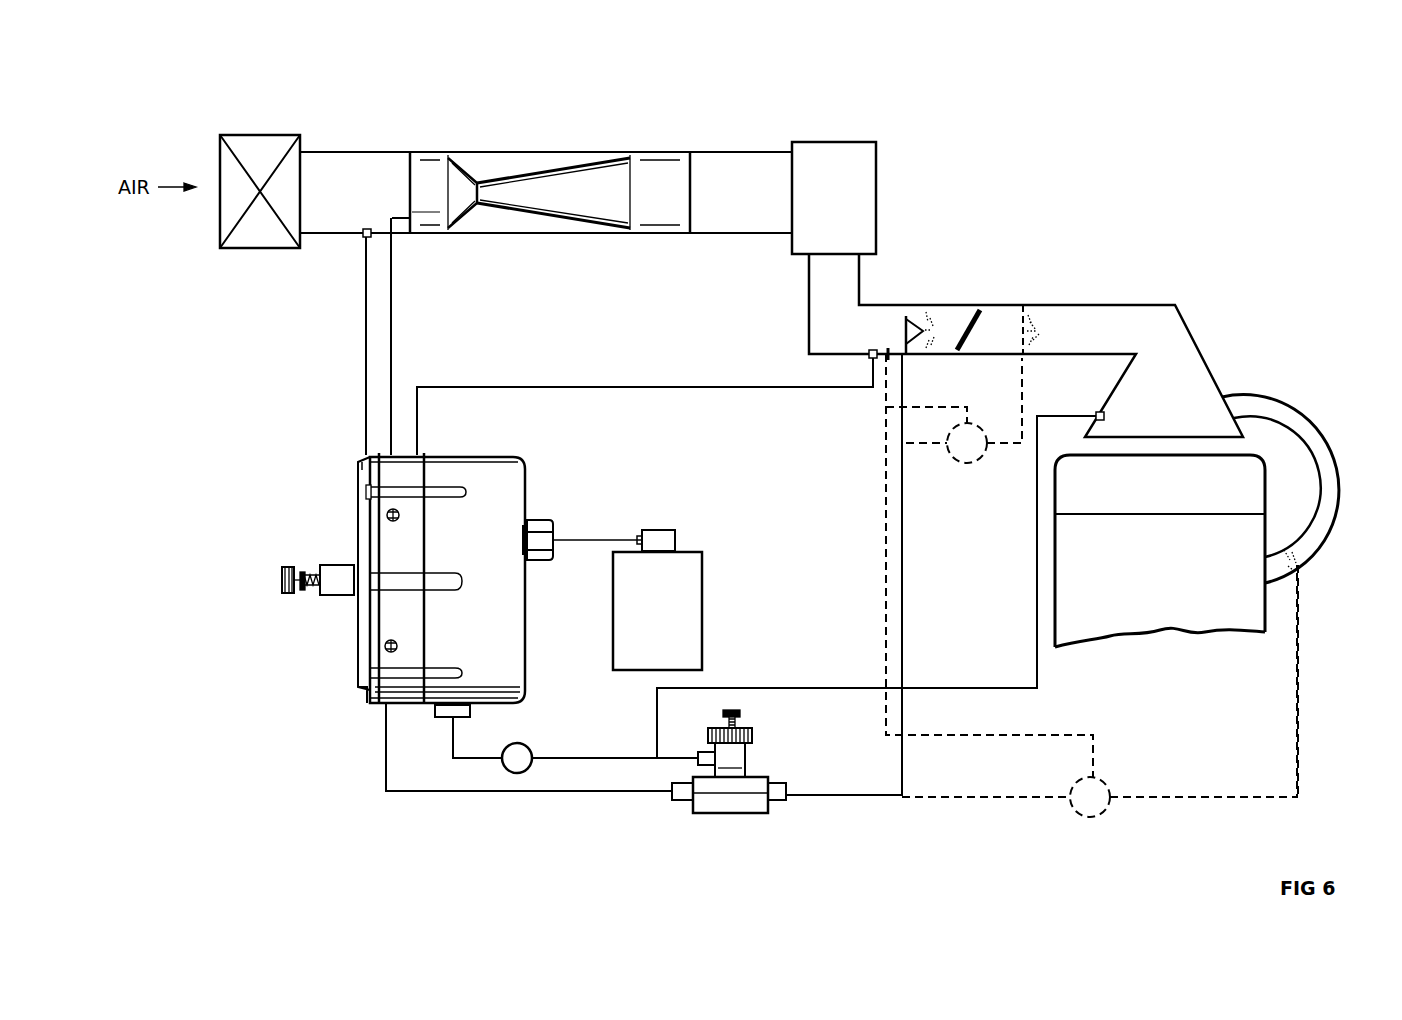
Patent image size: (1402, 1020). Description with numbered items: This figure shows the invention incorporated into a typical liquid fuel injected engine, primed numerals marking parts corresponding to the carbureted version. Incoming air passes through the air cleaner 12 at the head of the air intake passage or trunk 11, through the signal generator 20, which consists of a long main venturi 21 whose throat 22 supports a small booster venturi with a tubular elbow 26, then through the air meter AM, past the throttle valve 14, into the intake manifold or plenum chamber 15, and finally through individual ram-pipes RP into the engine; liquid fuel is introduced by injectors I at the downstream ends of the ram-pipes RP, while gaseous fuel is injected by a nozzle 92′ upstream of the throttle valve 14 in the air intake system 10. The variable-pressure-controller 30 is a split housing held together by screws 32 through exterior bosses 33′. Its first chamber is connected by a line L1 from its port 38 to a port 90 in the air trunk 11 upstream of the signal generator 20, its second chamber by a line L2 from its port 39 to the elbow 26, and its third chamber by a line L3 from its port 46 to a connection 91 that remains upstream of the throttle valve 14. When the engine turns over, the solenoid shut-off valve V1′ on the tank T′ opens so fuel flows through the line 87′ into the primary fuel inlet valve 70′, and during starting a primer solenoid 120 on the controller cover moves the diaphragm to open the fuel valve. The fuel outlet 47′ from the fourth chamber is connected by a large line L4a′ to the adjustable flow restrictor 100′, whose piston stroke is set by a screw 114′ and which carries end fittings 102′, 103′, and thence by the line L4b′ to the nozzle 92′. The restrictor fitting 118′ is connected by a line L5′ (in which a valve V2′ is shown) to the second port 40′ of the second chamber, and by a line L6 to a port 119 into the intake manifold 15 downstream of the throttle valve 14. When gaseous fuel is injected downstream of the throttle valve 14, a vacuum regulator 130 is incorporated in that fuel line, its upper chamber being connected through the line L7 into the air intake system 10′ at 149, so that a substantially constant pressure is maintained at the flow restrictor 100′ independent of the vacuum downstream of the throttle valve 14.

The air cleaner 12 is at (280, 136).
The air intake passage 10′ is at (347, 185).
The air intake trunk 11 is at (524, 158).
The throat of main venturi 22 is at (478, 182).
The main venturi 21 is at (600, 210).
The signal generator 20 is at (567, 198).
The tubular elbow 26 is at (418, 213).
The air meter AM is at (878, 162).
The air intake system 10 is at (846, 309).
The port in air trunk 90 is at (365, 240).
The line L1 is at (362, 347).
The line L2 is at (396, 310).
The line L3 is at (610, 386).
The port 91 is at (870, 358).
The connection point 149 is at (890, 349).
The fuel nozzle 92′ is at (915, 315).
The throttle valve 14 is at (972, 318).
The vacuum regulator 130 is at (973, 423).
The line L7 is at (884, 508).
The fuel line L4b′ is at (870, 800).
The intake manifold port 119 is at (1097, 412).
The line L6 is at (836, 687).
The intake manifold 15 is at (1205, 378).
The ram-pipes RP is at (1284, 420).
The injectors I is at (1283, 541).
The variable-pressure-controller 30 is at (495, 560).
The port 38 is at (358, 462).
The port 39 is at (378, 452).
The port 46 is at (425, 453).
The screws 32 is at (368, 490).
The primer solenoid 120 is at (332, 598).
The exterior bosses 33′ is at (450, 666).
The port 40′ is at (385, 706).
The fuel outlet 47′ is at (462, 716).
The primary fuel inlet valve 70′ is at (540, 527).
The fuel line 87′ is at (588, 538).
The solenoid shut-off valve V1′ is at (664, 530).
The tank T′ is at (690, 607).
The line L5′ is at (624, 757).
The valve V2′ is at (533, 765).
The fuel line L4a′ is at (485, 792).
The adjustable flow restrictor 100′ is at (820, 752).
The adjustment screw 114′ is at (740, 712).
The fitting 118′ is at (710, 750).
The fitting 102′ is at (680, 802).
The fitting 103′ is at (778, 800).